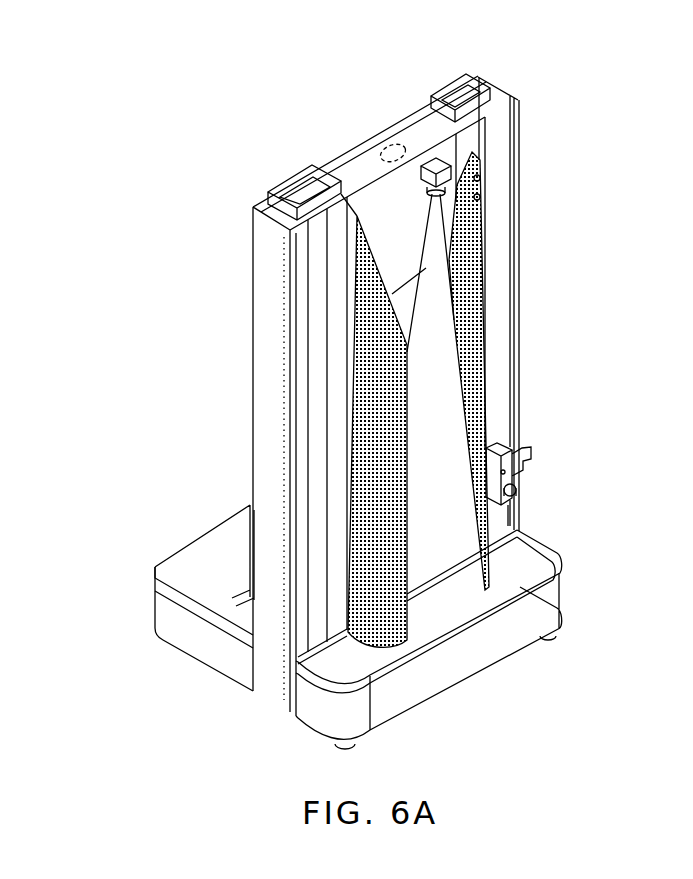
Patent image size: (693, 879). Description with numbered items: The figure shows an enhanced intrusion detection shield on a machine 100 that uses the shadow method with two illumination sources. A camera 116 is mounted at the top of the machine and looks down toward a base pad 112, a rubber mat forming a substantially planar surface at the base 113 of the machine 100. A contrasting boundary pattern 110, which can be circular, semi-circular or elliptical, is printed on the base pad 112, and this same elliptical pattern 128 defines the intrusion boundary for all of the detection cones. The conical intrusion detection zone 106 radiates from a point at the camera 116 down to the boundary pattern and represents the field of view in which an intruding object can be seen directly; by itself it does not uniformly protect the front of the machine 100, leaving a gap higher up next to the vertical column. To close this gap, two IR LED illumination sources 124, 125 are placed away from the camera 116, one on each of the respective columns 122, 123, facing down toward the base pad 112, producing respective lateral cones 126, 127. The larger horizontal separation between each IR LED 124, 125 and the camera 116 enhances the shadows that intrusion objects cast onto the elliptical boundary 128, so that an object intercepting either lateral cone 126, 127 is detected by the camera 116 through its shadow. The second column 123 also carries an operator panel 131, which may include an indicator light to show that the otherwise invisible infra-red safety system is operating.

The machine 100 is at (405, 413).
The conical intrusion detection zone 106 is at (424, 258).
The contrasting boundary pattern 110 is at (505, 622).
The base pad 112 is at (535, 563).
The base 113 is at (553, 603).
The camera 116 is at (420, 168).
The first column 122 is at (275, 307).
The second column 123 is at (514, 215).
The IR LED illumination source 124 is at (307, 187).
The IR LED illumination source 125 is at (473, 150).
The first lateral cone 126 is at (383, 645).
The second lateral cone 127 is at (490, 588).
The elliptical pattern 128 is at (455, 618).
The operator panel 131 is at (533, 457).